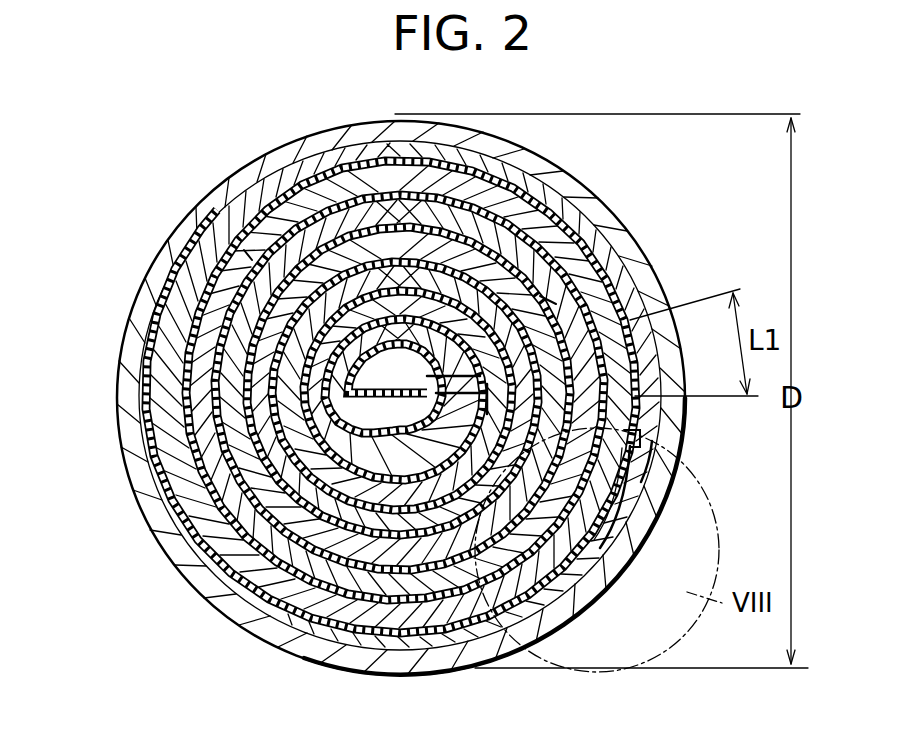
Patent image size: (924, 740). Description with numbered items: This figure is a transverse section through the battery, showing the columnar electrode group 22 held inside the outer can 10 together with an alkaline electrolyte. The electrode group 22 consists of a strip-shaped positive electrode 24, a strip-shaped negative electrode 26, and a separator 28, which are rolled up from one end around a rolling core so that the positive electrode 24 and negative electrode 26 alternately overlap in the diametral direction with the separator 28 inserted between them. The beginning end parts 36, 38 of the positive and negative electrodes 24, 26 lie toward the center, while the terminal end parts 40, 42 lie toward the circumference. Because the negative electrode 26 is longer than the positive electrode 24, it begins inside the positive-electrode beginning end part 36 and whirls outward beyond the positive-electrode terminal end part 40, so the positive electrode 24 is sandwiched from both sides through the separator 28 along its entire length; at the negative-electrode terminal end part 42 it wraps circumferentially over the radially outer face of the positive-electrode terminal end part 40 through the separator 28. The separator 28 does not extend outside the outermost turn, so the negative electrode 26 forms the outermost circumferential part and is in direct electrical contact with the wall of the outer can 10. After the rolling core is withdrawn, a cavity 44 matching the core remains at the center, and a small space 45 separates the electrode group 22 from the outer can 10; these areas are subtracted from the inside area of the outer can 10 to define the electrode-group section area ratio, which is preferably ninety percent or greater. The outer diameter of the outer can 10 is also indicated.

The outer can 10 is at (137, 298).
The electrode group 22 is at (620, 218).
The positive electrode 24 is at (203, 514).
The negative electrode 26 is at (245, 565).
The separator 28 is at (268, 622).
The positive-electrode beginning end part 36 is at (548, 300).
The negative-electrode beginning end part 38 is at (390, 443).
The positive-electrode terminal end part 40 is at (620, 530).
The negative-electrode terminal end part 42 is at (632, 446).
The cavity 44 is at (248, 255).
The space 45 is at (641, 460).